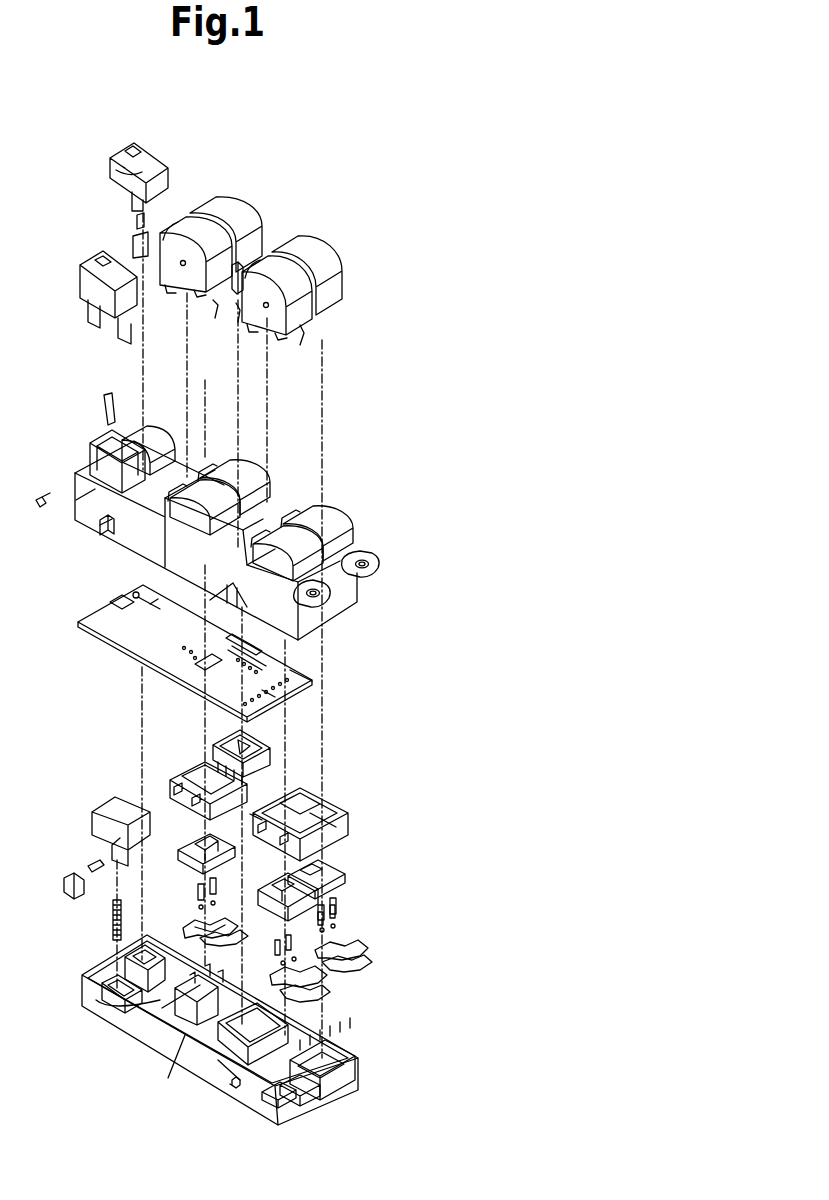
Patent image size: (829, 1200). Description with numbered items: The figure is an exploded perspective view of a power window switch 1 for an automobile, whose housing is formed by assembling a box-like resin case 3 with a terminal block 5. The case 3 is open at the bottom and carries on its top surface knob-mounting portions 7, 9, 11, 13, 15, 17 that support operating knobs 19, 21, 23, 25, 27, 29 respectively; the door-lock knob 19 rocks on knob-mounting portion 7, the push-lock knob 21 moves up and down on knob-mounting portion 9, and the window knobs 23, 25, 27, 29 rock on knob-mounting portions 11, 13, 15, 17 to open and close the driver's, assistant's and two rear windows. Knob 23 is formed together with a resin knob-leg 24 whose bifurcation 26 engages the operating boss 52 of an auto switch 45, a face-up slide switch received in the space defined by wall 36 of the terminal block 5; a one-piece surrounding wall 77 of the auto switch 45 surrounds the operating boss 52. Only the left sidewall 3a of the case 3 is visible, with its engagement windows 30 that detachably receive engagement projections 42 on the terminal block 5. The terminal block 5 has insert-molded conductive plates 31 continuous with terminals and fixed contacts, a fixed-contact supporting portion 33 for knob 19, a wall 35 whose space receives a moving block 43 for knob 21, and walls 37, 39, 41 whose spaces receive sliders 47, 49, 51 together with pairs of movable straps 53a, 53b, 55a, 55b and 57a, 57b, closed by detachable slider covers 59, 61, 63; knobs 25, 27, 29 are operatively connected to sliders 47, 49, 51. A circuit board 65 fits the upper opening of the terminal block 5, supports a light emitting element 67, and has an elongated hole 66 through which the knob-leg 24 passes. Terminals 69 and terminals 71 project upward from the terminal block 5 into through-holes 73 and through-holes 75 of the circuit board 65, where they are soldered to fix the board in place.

The power window switch 1 is at (380, 170).
The case 3 is at (368, 601).
The sidewall 3a is at (80, 512).
The terminal block 5 is at (136, 1052).
The knob-mounting portion 7 is at (168, 424).
The knob-mounting portion 9 is at (86, 445).
The knob-mounting portion 11 is at (265, 462).
The knob-mounting portion 13 is at (252, 490).
The knob-mounting portion 15 is at (348, 496).
The knob-mounting portion 17 is at (340, 539).
The operating knob 19 is at (160, 160).
The operating knob 21 is at (77, 282).
The operating knob 23 is at (242, 214).
The knob-leg 24 is at (246, 275).
The operating knob 25 is at (222, 302).
The bifurcation 26 is at (237, 312).
The operating knob 27 is at (330, 284).
The operating knob 29 is at (304, 332).
The engagement window 30 is at (112, 545).
The electrically conductive plate 31 is at (300, 1120).
The fixed-contact supporting portion 33 is at (142, 1000).
The wall 35 is at (104, 1001).
The wall 36 is at (245, 1012).
The wall 37 is at (186, 1058).
The wall 39 is at (350, 1090).
The wall 41 is at (300, 1110).
The engagement projection 42 is at (238, 1090).
The moving block 43 is at (100, 806).
The auto switch 45 is at (290, 772).
The slider 47 is at (190, 858).
The slider 49 is at (346, 882).
The slider 51 is at (275, 895).
The operating boss 52 is at (216, 740).
The movable strap 53a is at (195, 922).
The movable strap 53b is at (232, 930).
The movable strap 55a is at (370, 953).
The movable strap 55b is at (362, 970).
The movable strap 57a is at (280, 968).
The movable strap 57b is at (326, 992).
The slider cover 59 is at (196, 772).
The slider cover 61 is at (346, 822).
The slider cover 63 is at (258, 812).
The circuit board 65 is at (306, 680).
The elongated hole 66 is at (298, 662).
The light emitting element 67 is at (134, 595).
The terminal 69 is at (229, 1084).
The terminal 71 is at (160, 1040).
The through-hole 73 is at (272, 704).
The through-hole 75 is at (136, 660).
The surrounding wall 77 is at (240, 745).